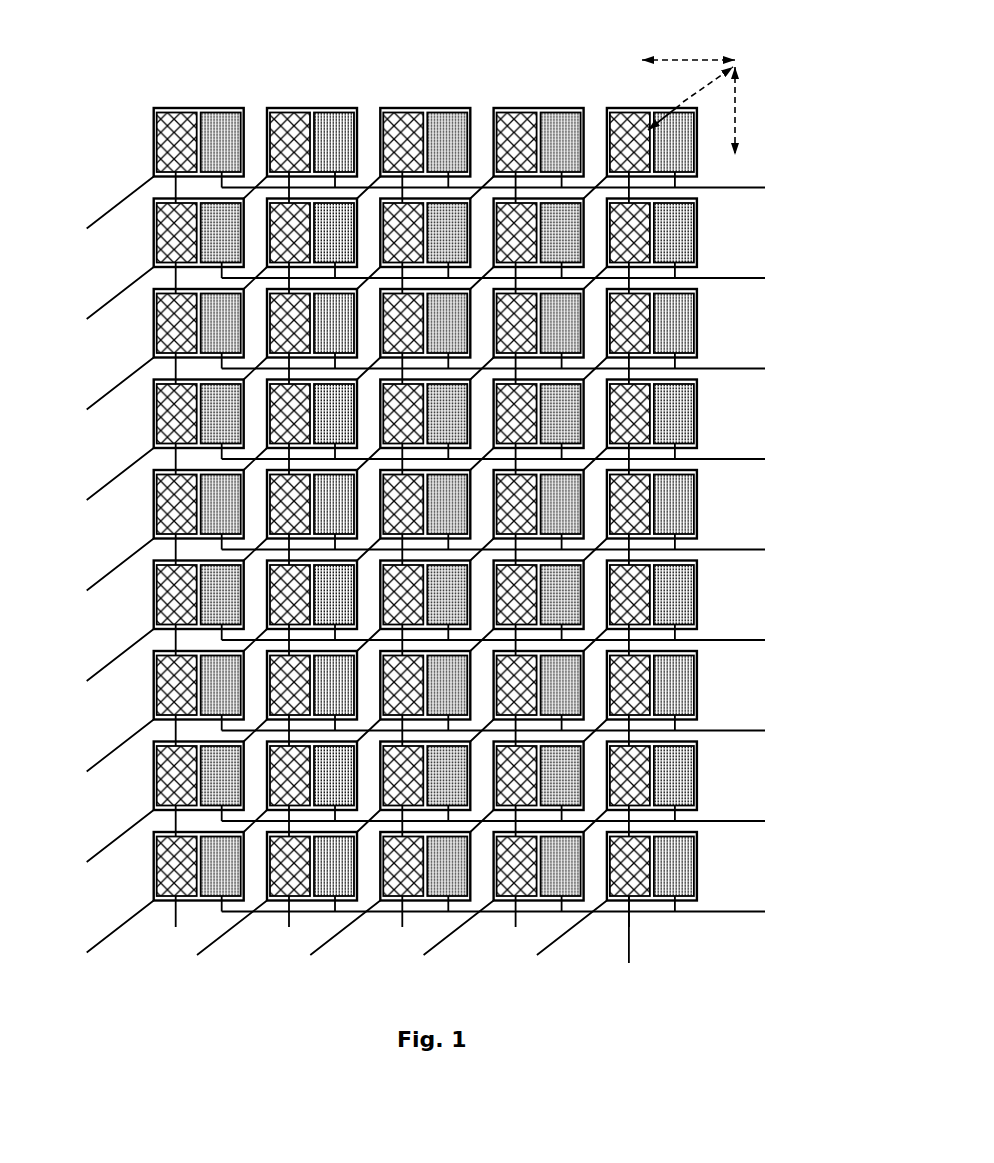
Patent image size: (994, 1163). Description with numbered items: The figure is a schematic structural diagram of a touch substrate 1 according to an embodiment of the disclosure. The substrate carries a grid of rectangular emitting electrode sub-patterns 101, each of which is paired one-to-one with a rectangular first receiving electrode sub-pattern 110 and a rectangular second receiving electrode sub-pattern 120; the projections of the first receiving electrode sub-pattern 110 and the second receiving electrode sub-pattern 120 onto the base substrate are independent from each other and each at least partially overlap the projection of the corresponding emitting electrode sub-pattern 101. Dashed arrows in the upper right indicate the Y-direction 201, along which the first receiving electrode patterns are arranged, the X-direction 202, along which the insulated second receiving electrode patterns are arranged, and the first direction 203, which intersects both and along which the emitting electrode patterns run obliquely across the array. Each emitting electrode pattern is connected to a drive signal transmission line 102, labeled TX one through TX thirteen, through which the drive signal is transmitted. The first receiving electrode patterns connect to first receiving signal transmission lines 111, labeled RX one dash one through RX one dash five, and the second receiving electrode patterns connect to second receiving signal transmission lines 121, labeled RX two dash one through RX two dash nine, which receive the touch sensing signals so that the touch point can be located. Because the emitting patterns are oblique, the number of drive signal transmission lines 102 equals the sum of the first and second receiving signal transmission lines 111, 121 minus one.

The touch substrate 1 is at (153, 78).
The emitting electrode sub-pattern 101 is at (295, 108).
The drive signal transmission line 102 is at (125, 192).
The first receiving electrode sub-pattern 110 is at (393, 113).
The first receiving signal transmission line 111 is at (632, 935).
The second receiving electrode sub-pattern 120 is at (440, 113).
The second receiving signal transmission line 121 is at (730, 277).
The Y-direction 201 is at (735, 107).
The X-direction 202 is at (692, 60).
The first direction 203 is at (683, 102).